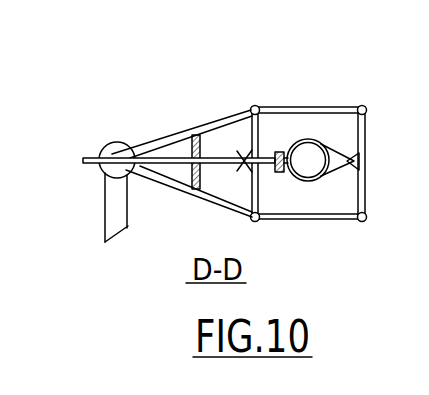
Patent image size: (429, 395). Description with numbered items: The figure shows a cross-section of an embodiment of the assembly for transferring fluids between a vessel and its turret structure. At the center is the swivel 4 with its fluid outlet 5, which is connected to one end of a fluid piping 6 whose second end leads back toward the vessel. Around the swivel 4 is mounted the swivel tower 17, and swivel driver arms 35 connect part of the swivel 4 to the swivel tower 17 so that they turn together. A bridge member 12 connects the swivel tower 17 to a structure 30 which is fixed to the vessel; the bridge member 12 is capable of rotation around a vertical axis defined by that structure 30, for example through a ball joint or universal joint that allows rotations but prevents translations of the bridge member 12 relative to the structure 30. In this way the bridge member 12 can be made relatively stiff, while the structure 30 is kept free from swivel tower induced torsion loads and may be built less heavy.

The swivel 4 is at (308, 183).
The fluid outlet 5 is at (280, 150).
The fluid piping 6 is at (168, 136).
The bridge member 12 is at (165, 190).
The swivel tower 17 is at (336, 107).
The structure 30 is at (110, 212).
The swivel driver arms 35 is at (341, 168).